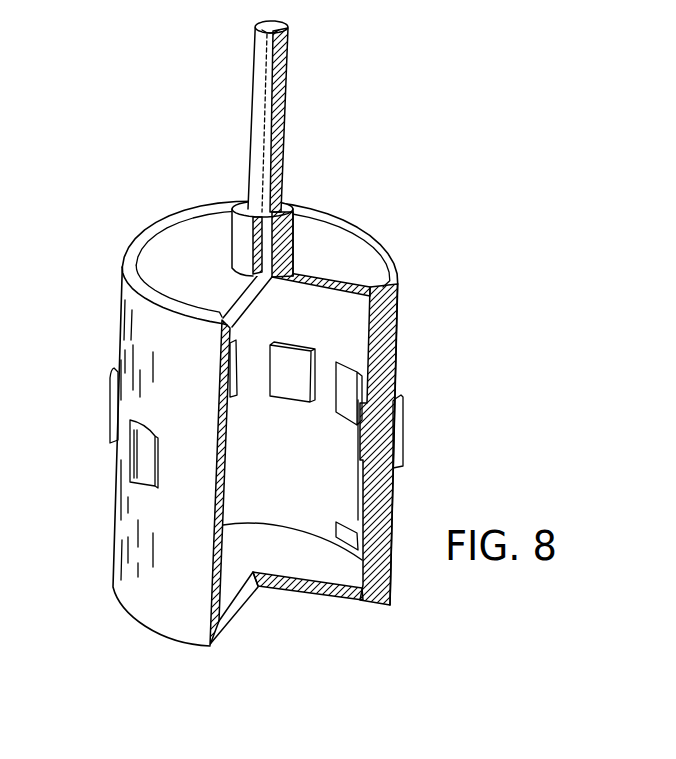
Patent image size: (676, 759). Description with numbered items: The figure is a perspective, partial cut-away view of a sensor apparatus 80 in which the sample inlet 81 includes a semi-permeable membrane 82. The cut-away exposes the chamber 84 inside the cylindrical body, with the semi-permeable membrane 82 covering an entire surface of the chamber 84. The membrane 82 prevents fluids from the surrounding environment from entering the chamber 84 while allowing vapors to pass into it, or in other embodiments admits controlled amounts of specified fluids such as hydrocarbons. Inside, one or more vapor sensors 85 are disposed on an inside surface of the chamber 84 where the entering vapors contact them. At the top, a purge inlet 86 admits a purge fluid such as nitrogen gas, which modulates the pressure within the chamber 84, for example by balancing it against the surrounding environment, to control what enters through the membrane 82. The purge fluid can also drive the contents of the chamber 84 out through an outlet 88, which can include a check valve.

The sensor apparatus 80 is at (87, 207).
The sample inlet 81 is at (232, 613).
The semi-permeable membrane 82 is at (323, 600).
The chamber 84 is at (287, 470).
The vapor sensor 85 is at (348, 362).
The purge inlet 86 is at (297, 237).
The outlet 88 is at (338, 520).